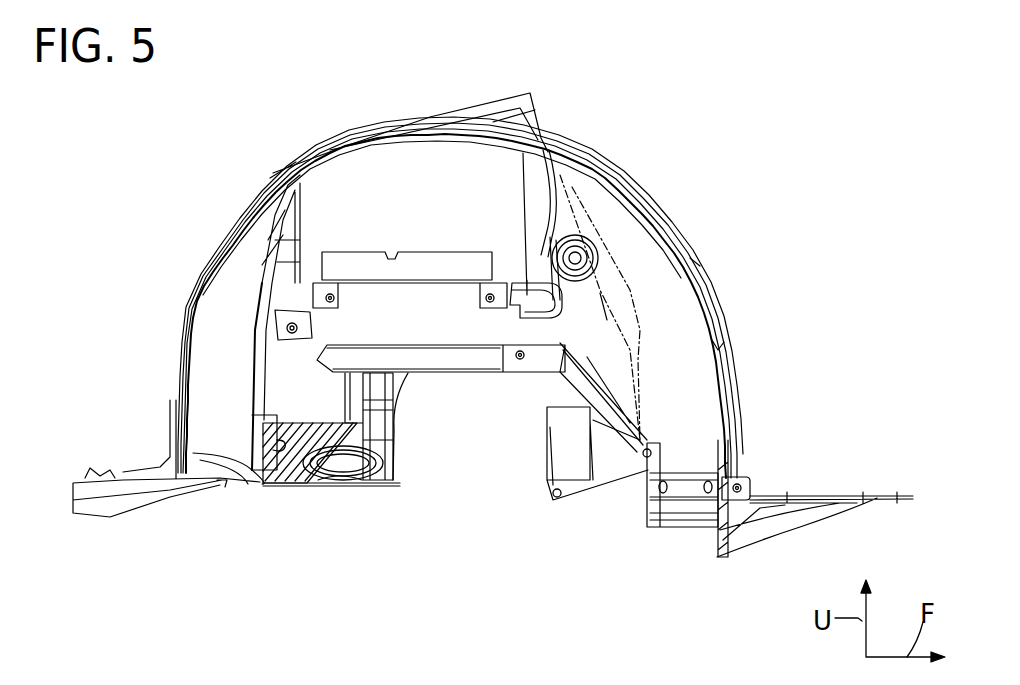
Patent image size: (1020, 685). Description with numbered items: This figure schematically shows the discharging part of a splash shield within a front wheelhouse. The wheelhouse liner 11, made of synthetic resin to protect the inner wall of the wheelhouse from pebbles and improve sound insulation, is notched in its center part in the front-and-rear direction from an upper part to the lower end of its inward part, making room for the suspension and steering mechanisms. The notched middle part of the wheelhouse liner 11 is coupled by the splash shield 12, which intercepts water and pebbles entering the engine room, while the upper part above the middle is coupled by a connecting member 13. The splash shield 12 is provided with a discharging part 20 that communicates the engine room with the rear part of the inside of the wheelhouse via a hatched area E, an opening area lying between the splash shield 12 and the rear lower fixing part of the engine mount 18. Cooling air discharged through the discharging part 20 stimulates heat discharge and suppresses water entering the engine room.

The wheelhouse liner 11 is at (675, 310).
The splash shield 12 is at (387, 480).
The connecting member 13 is at (418, 252).
The engine mount 18 is at (337, 492).
The discharging part 20 is at (277, 440).
The hatched area E is at (270, 475).